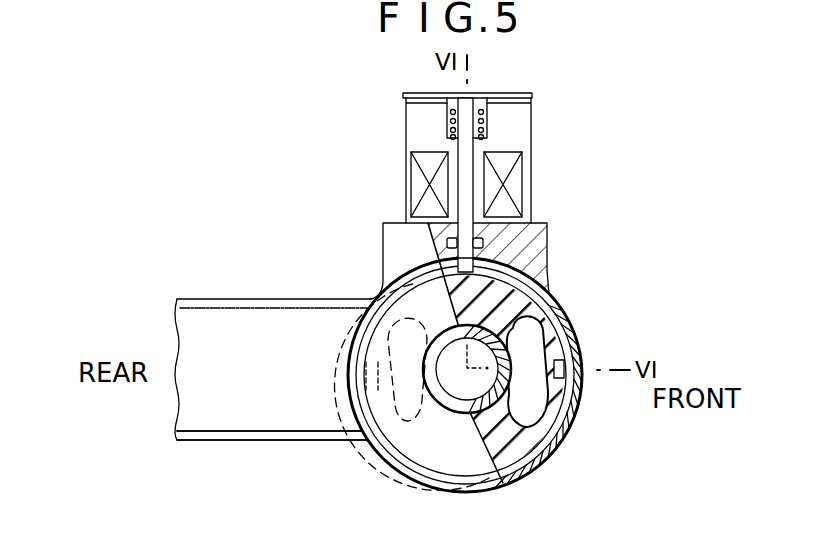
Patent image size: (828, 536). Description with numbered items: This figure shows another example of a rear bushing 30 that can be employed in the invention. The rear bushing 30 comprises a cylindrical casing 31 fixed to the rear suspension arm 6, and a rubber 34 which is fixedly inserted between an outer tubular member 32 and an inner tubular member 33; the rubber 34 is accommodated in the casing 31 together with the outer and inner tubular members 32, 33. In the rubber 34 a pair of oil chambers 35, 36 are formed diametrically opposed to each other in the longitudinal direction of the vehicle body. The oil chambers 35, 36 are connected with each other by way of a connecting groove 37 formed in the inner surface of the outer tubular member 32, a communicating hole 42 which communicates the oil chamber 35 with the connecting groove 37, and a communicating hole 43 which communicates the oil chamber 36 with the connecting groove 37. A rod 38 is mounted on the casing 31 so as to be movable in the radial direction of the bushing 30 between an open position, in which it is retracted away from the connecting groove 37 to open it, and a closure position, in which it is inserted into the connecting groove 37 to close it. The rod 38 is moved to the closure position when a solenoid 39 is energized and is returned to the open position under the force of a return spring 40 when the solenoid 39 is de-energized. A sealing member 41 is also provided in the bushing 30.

The rear suspension arm 6 is at (288, 437).
The rear bushing 30 is at (549, 232).
The cylindrical casing 31 is at (549, 262).
The outer tubular member 32 is at (546, 452).
The inner tubular member 33 is at (435, 380).
The rubber 34 is at (561, 285).
The oil chamber 35 is at (527, 408).
The oil chamber 36 is at (407, 438).
The connecting groove 37 is at (580, 310).
The rod 38 is at (470, 157).
The solenoid 39 is at (517, 186).
The return spring 40 is at (489, 115).
The sealing member 41 is at (448, 243).
The communicating hole 42 is at (583, 365).
The communicating hole 43 is at (348, 390).